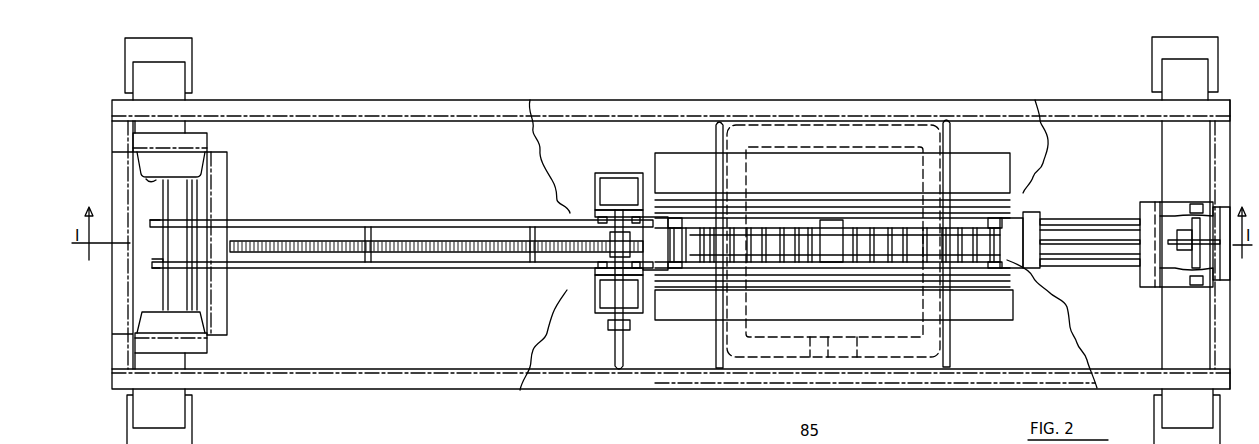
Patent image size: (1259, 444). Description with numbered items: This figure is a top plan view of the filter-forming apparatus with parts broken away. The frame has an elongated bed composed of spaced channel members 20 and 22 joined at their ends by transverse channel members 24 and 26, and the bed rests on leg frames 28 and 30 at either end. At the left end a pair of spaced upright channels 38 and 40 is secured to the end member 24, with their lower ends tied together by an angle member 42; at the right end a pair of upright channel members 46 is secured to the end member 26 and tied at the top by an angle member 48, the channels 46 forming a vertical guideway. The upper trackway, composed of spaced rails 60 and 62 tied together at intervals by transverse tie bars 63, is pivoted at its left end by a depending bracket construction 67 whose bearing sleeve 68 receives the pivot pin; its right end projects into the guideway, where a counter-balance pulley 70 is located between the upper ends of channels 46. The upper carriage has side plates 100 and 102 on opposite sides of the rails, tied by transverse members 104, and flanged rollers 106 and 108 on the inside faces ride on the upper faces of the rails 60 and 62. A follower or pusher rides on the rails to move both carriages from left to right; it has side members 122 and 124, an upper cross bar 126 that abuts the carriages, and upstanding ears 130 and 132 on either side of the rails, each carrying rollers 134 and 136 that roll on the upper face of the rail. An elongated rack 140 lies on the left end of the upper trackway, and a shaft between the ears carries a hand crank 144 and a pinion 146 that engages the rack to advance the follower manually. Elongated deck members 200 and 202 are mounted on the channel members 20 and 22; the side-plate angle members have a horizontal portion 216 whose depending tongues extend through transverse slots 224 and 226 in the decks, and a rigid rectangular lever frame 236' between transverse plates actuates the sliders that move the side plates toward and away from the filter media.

The channel member 20 is at (392, 380).
The channel member 22 is at (392, 108).
The transverse channel member 24 is at (120, 350).
The transverse channel member 26 is at (1218, 331).
The leg frame 28 is at (187, 433).
The leg frame 30 is at (1213, 434).
The upright channel 38 is at (153, 308).
The upright channel 40 is at (163, 220).
The angle member 42 is at (218, 180).
The upright channel member 46 is at (1173, 215).
The angle member 48 is at (1148, 203).
The rail 60 is at (467, 262).
The rail 62 is at (465, 222).
The transverse tie bar 63 is at (372, 258).
The depending bracket construction 67 is at (152, 235).
The bearing sleeve 68 is at (195, 202).
The pulley 70 is at (1228, 262).
The side plate 100 is at (1000, 258).
The side plate 102 is at (1015, 230).
The transverse member 104 is at (1022, 222).
The flanged roller 106 is at (1060, 300).
The flanged roller 108 is at (675, 217).
The side member 122 is at (630, 317).
The side member 124 is at (618, 173).
The upper cross bar 126 is at (600, 236).
The ear 130 is at (597, 278).
The ear 132 is at (607, 207).
The roller 134 is at (645, 223).
The roller 136 is at (597, 227).
The rack 140 is at (437, 253).
The hand crank 144 is at (563, 333).
The pinion 146 is at (597, 248).
The deck member 200 is at (593, 358).
The deck member 202 is at (585, 132).
The horizontal portion 216 is at (980, 157).
The transverse slot 224 is at (950, 350).
The transverse slot 226 is at (717, 132).
The inner housing outline 236' is at (845, 280).